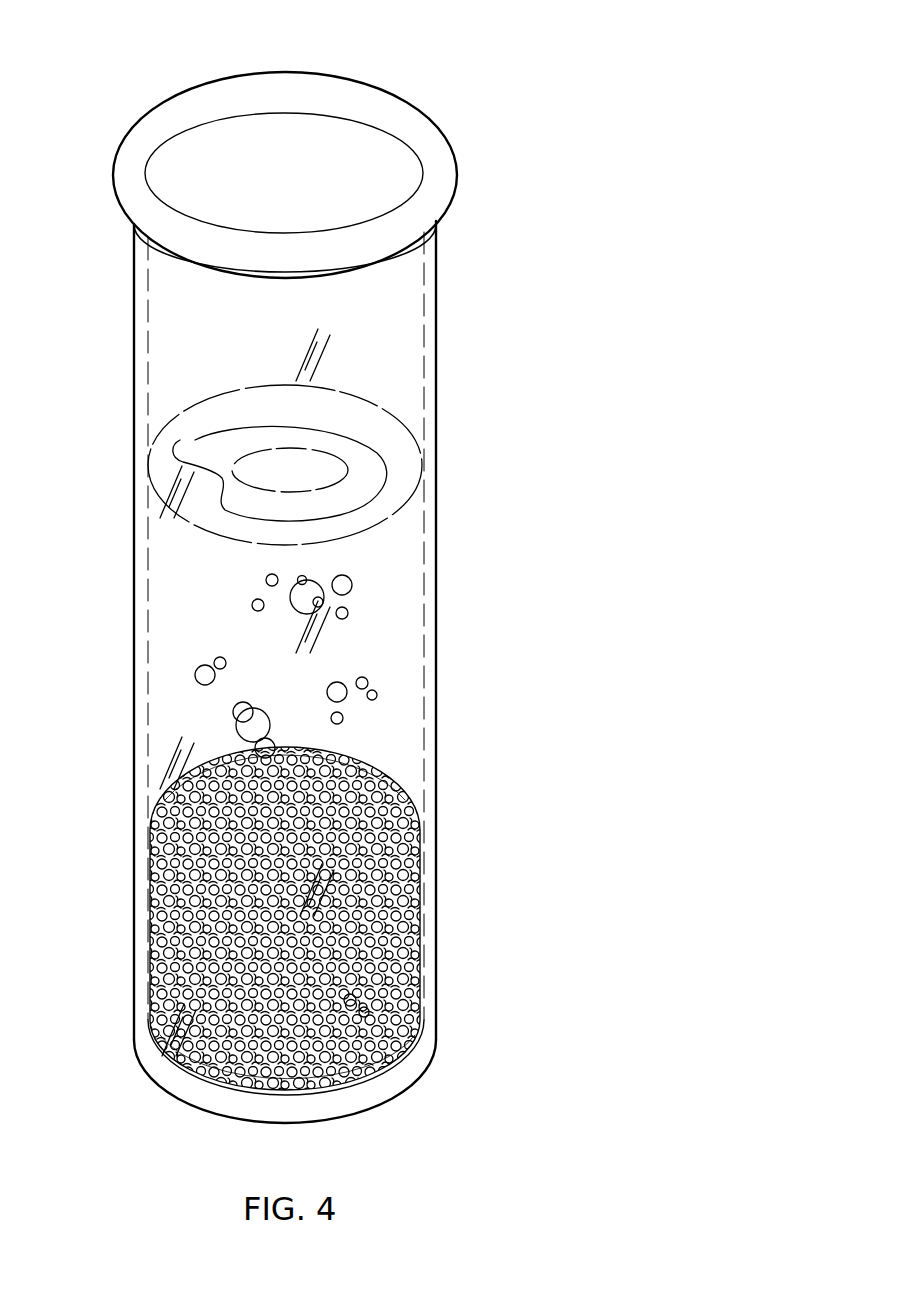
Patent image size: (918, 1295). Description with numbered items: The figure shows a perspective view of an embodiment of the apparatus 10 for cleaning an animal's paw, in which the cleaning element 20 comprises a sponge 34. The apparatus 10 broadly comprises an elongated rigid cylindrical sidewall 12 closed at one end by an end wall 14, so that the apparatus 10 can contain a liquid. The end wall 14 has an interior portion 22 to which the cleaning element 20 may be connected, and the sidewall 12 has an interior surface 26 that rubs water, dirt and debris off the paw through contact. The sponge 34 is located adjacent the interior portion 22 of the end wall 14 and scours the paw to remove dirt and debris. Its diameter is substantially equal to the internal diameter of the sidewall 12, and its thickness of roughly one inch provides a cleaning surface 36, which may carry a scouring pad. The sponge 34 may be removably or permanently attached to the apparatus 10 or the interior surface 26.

The apparatus 10 is at (536, 76).
The sidewall 12 is at (125, 562).
The end wall 14 is at (224, 1121).
The cleaning element 20 is at (247, 985).
The interior portion 22 is at (326, 1096).
The interior surface 26 is at (432, 697).
The sponge 34 is at (350, 1007).
The cleaning surface 36 is at (290, 806).